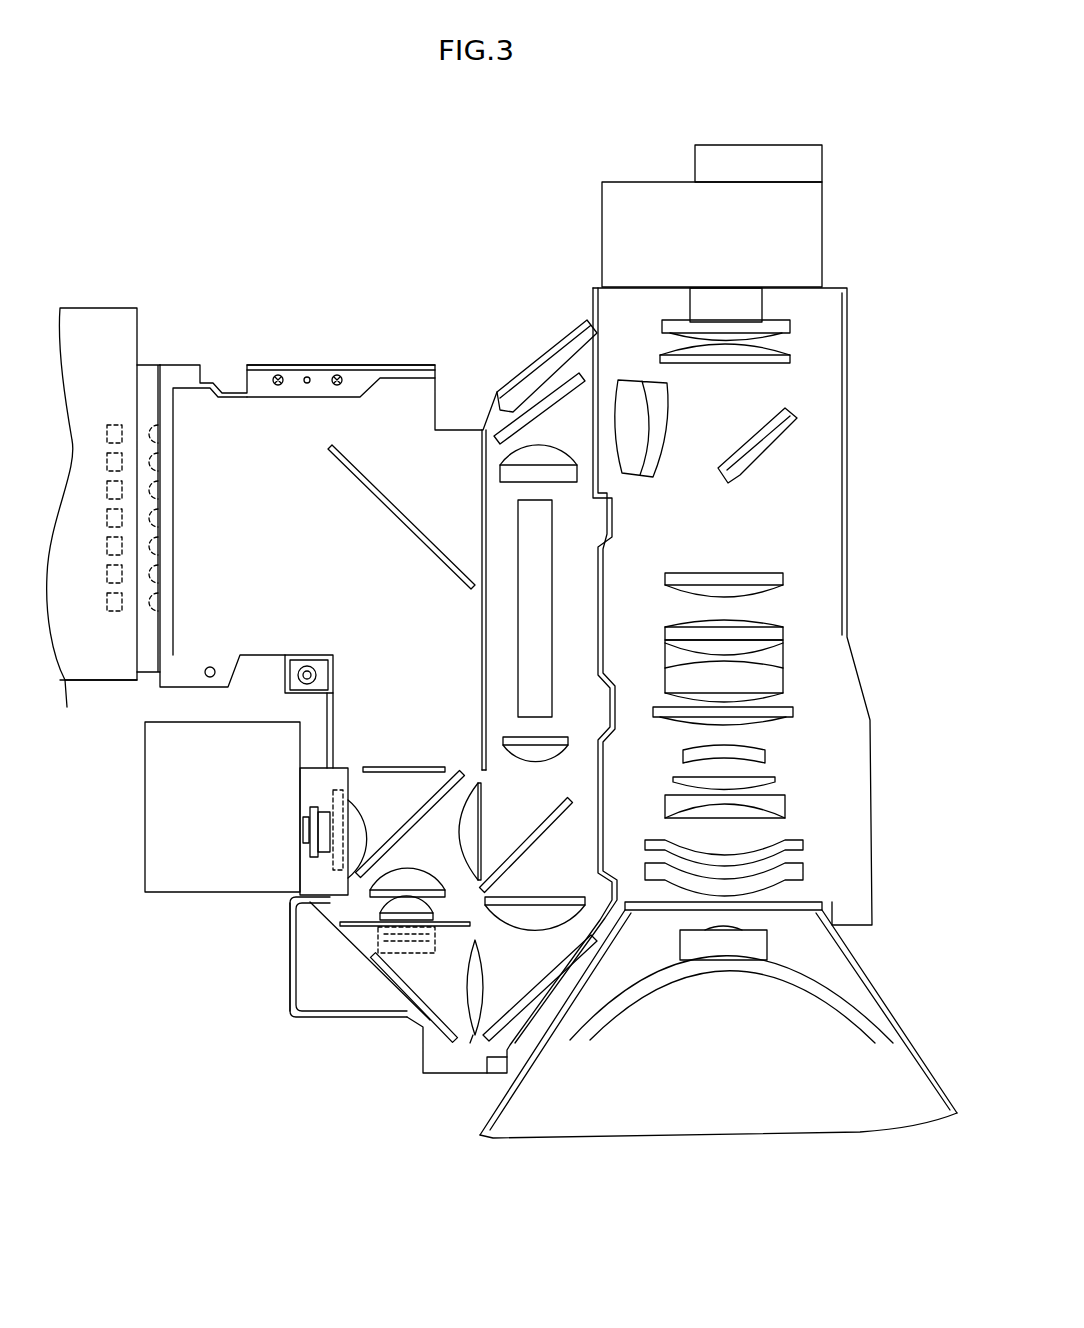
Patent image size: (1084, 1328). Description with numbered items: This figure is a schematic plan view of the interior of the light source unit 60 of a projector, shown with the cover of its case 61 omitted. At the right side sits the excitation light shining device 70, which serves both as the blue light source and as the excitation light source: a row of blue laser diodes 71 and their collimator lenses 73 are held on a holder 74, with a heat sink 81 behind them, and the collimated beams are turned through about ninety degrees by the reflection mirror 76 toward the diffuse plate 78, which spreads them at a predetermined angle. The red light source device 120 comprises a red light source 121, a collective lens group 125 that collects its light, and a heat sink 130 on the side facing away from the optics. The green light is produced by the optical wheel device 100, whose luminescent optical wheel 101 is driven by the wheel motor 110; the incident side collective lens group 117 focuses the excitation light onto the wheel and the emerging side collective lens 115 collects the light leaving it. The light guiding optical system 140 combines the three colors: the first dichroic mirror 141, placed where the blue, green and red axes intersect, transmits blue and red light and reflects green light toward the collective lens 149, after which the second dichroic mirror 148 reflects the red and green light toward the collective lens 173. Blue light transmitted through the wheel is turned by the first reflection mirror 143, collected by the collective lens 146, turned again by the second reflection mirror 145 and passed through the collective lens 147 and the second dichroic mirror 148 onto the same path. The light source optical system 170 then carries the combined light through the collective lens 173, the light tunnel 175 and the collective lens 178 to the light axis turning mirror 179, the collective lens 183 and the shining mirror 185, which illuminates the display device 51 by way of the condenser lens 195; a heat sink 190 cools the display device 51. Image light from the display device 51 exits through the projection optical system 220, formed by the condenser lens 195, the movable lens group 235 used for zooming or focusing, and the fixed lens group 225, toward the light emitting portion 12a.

The light emitting portion 12a is at (690, 1103).
The display device 51 is at (770, 337).
The light source unit 60 is at (187, 313).
The case 61 is at (355, 375).
The excitation light shining device 70 is at (108, 377).
The blue laser diodes 71 is at (122, 622).
The collimator lenses 73 is at (162, 607).
The holder 74 is at (148, 672).
The reflection mirror 76 is at (352, 475).
The diffuse plate 78 is at (380, 765).
The heat sink 81 is at (100, 672).
The optical wheel device 100 is at (350, 950).
The optical wheel 101 is at (333, 927).
The wheel motor 110 is at (380, 950).
The emerging side collective lens 115 is at (392, 950).
The incident side collective lens group 117 is at (412, 857).
The red light source device 120 is at (253, 878).
The red light source 121 is at (303, 832).
The collective lens group 125 is at (312, 793).
The heat sink 130 is at (175, 817).
The light guiding optical system 140 is at (490, 785).
The first dichroic mirror 141 is at (397, 855).
The first reflection mirror 143 is at (410, 1012).
The second reflection mirror 145 is at (532, 993).
The collective lens 146 is at (472, 1035).
The collective lens 147 is at (538, 893).
The second dichroic mirror 148 is at (572, 800).
The collective lens 149 is at (482, 832).
The light source optical system 170 is at (576, 360).
The collective lens 173 is at (515, 737).
The light tunnel 175 is at (520, 642).
The collective lens 178 is at (502, 478).
The light axis turning mirror 179 is at (497, 440).
The collective lens 183 is at (638, 478).
The shining mirror 185 is at (783, 437).
The heat sink 190 is at (810, 208).
The condenser lens 195 is at (777, 362).
The projection optical system 220 is at (810, 710).
The fixed lens group 225 is at (797, 815).
The movable lens group 235 is at (767, 608).